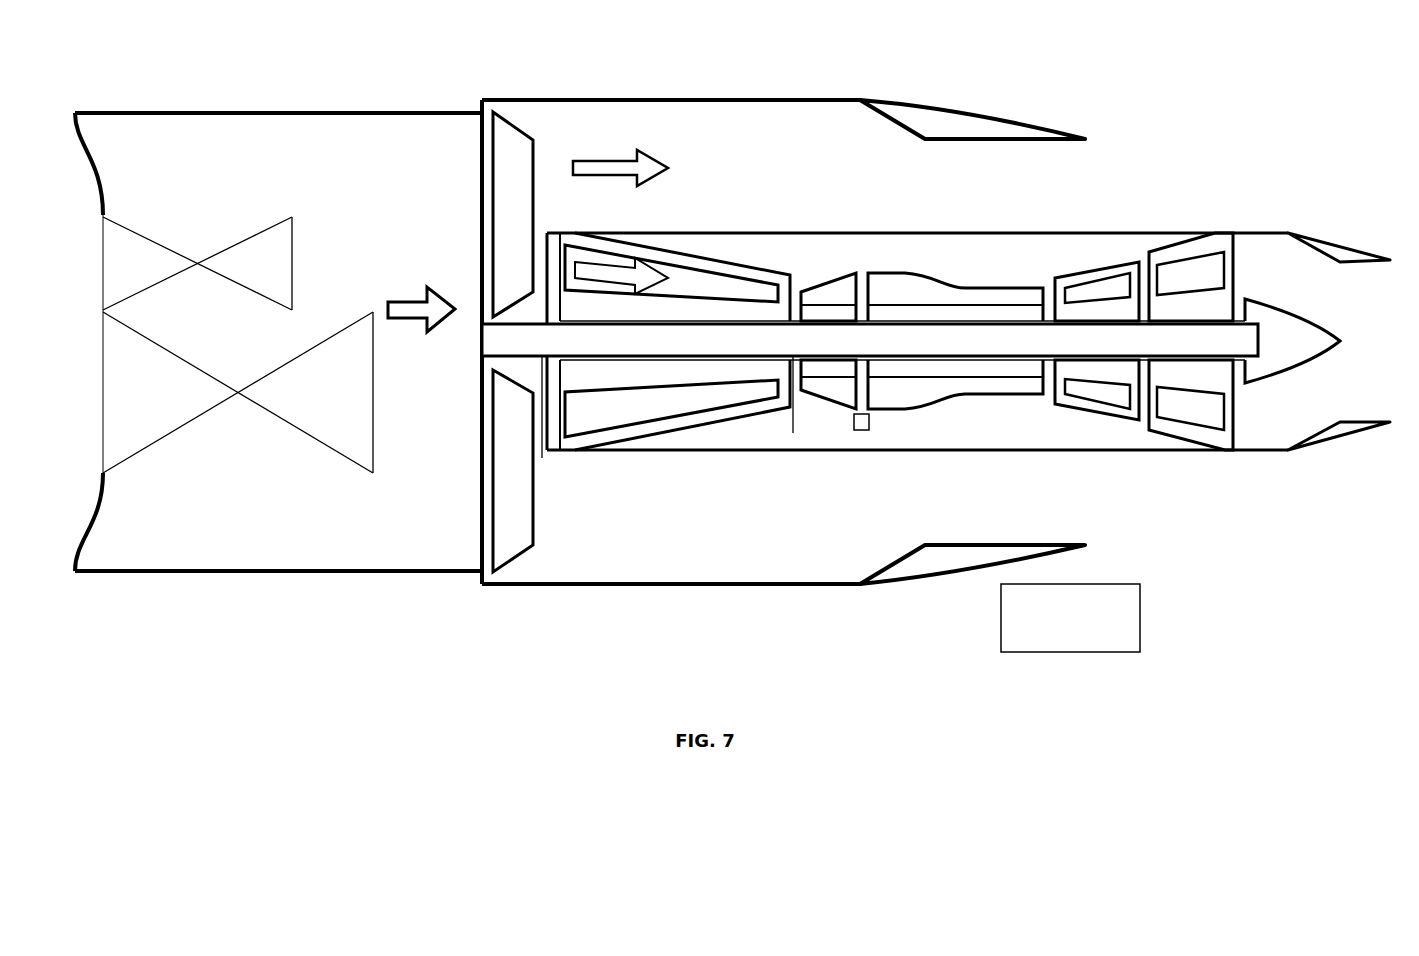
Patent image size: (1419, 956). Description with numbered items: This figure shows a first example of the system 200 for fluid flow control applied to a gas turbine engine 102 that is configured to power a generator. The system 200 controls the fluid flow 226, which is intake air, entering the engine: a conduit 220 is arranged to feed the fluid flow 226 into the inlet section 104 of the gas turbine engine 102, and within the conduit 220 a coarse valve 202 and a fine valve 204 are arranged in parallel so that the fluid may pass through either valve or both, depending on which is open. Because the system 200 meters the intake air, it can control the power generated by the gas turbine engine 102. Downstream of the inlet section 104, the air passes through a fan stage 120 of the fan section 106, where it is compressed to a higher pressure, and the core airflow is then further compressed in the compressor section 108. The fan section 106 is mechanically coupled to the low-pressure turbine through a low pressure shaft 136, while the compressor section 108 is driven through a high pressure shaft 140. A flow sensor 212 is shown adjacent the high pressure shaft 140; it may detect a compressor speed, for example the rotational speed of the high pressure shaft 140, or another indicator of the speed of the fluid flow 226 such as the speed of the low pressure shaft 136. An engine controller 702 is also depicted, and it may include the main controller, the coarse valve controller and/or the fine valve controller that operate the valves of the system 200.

The system of fluid flow control 200 is at (152, 92).
The conduit 220 is at (360, 112).
The fine valve 204 is at (143, 243).
The coarse valve 202 is at (157, 437).
The fluid flow 226 is at (400, 298).
The inlet section 104 is at (482, 194).
The gas turbine engine 102 is at (1080, 112).
The fan section 106 is at (518, 310).
The fan stage 120 is at (507, 143).
The compressor section 108 is at (727, 248).
The low pressure shaft 136 is at (542, 458).
The high pressure shaft 140 is at (793, 433).
The flow sensor 212 is at (862, 420).
The engine controller 702 is at (1070, 618).